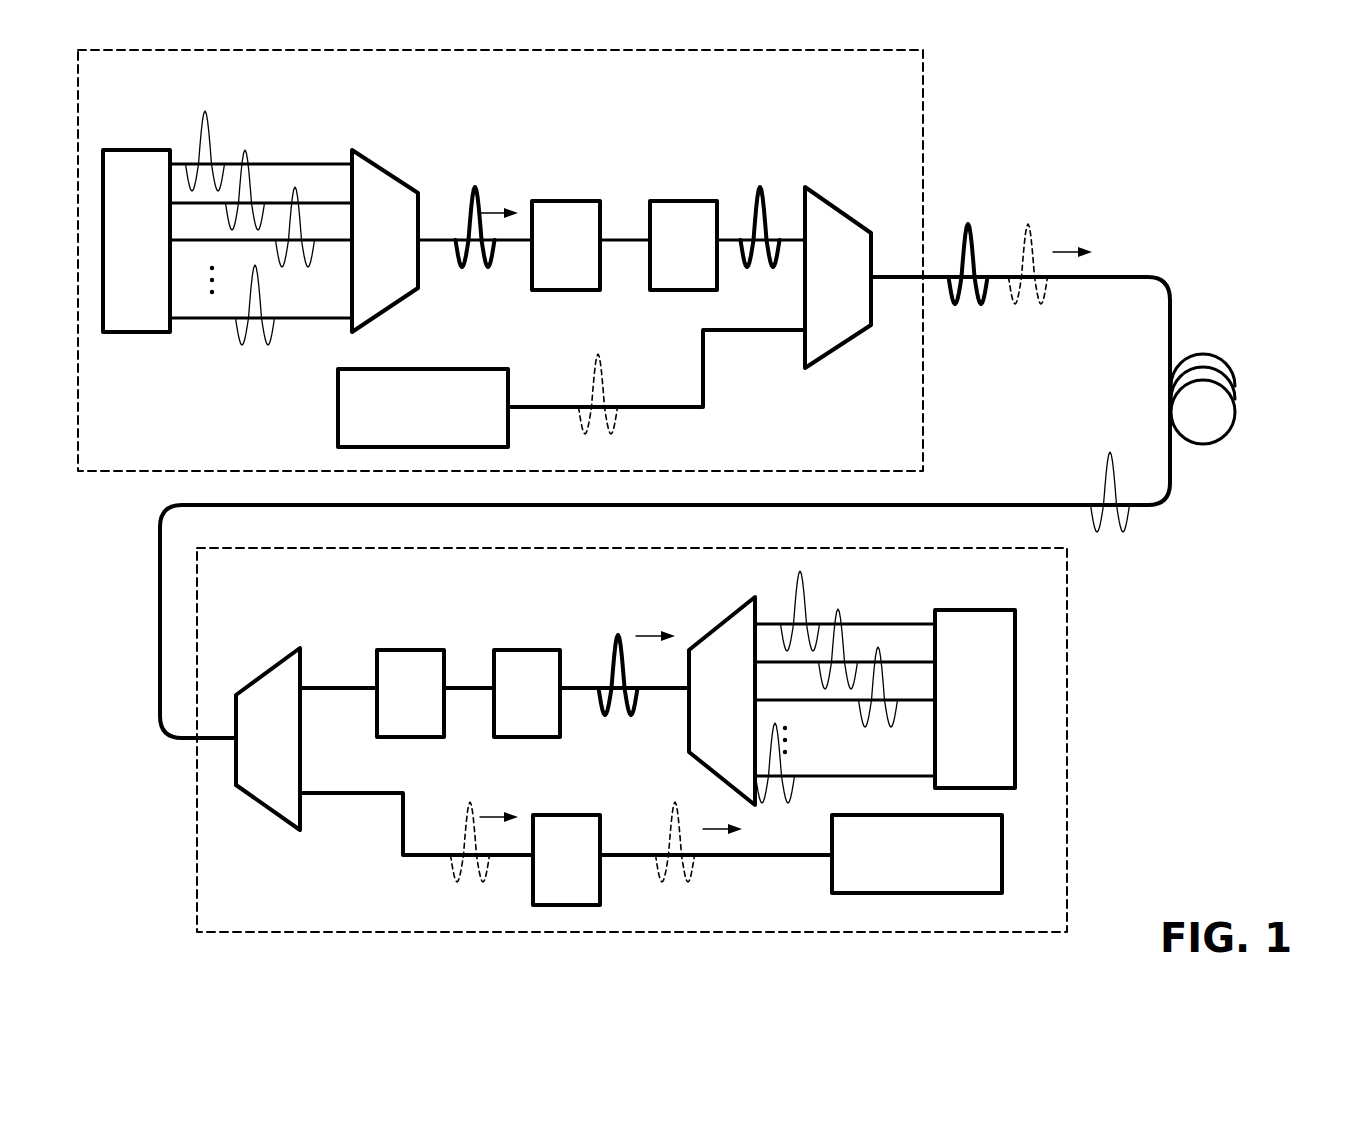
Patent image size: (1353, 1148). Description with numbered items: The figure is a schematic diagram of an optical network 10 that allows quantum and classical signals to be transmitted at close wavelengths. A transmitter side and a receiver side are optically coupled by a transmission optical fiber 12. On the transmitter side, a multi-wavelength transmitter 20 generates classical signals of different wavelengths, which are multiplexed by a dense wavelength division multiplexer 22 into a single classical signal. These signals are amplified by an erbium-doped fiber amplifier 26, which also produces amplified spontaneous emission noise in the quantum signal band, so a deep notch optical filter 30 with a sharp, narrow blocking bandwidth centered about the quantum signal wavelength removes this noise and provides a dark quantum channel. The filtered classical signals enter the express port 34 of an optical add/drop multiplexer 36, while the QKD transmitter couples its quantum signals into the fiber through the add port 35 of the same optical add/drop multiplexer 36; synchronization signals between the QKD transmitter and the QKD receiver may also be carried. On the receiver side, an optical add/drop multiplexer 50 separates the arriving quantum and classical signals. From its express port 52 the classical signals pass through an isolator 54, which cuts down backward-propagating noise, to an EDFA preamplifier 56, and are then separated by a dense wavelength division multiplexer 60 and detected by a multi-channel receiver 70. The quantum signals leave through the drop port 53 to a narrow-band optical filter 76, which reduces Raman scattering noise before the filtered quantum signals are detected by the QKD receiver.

The optical network 10 is at (1188, 156).
The transmission optical fiber 12 is at (1185, 298).
The multi-wavelength transmitter 20 is at (136, 241).
The dense wavelength division multiplexer 22 is at (385, 241).
The erbium-doped fiber amplifier 26 is at (566, 245).
The deep notch optical filter 30 is at (683, 245).
The express port 34 is at (805, 225).
The add port 35 is at (805, 350).
The optical add/drop multiplexer 36 is at (838, 277).
The optical add/drop multiplexer 50 is at (268, 739).
The express port 52 is at (300, 672).
The drop port 53 is at (304, 800).
The isolator 54 is at (410, 693).
The EDFA preamplifier 56 is at (527, 693).
The dense wavelength division multiplexer 60 is at (722, 701).
The multi-channel receiver 70 is at (975, 699).
The optical filter 76 is at (566, 860).